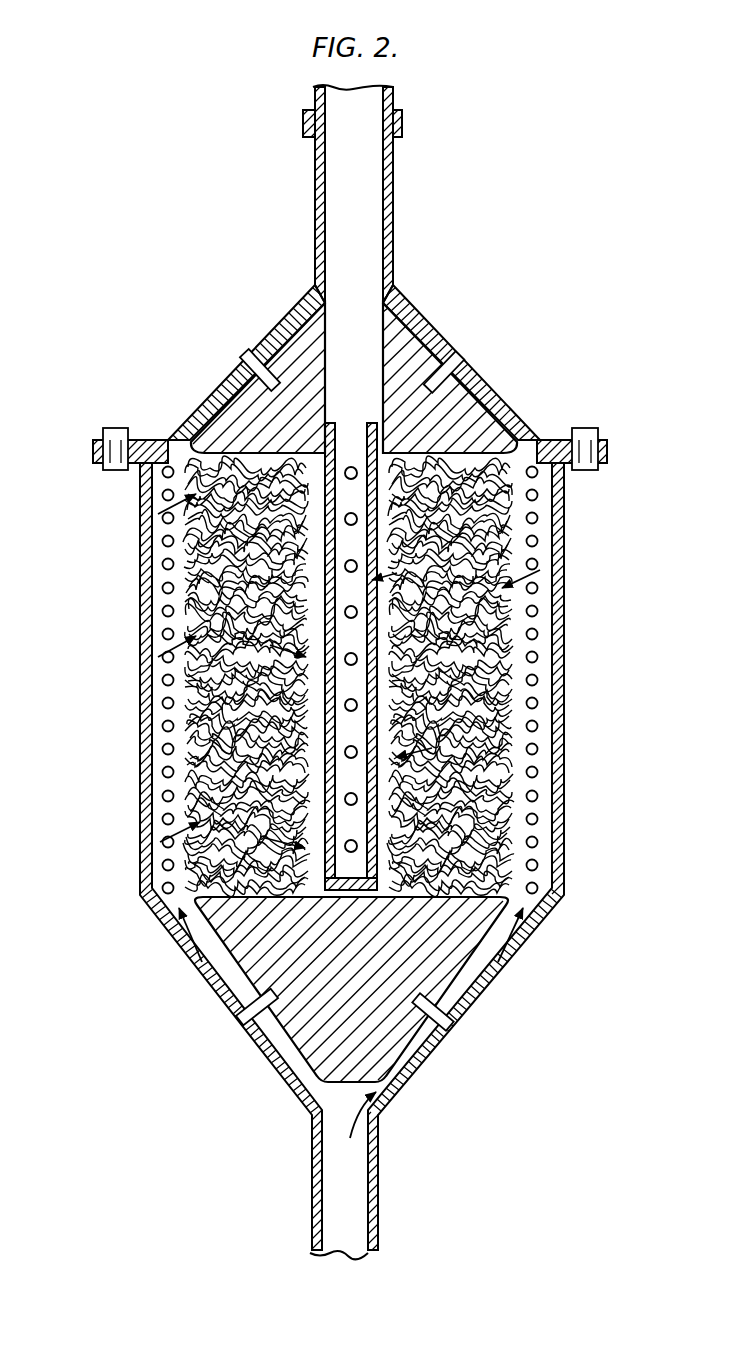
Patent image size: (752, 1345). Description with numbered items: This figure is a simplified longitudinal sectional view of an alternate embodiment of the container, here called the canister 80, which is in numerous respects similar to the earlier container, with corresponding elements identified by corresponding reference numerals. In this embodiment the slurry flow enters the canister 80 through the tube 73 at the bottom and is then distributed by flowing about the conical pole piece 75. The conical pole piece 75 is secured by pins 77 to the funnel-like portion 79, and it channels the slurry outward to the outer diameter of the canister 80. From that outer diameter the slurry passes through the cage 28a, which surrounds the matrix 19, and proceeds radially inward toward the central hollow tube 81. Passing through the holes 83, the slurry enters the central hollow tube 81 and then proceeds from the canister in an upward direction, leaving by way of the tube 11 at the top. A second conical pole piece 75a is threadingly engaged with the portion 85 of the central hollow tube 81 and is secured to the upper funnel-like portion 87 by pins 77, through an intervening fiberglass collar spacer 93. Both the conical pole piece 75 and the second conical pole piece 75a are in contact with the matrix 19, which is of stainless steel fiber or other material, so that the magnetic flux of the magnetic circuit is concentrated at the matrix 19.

The tube 11 is at (375, 229).
The upper funnel-like portion 87 is at (277, 320).
The fiberglass collar spacer 93 is at (480, 386).
The second conical pole piece 75a is at (226, 447).
The portion of tube 85 is at (330, 650).
The matrix 19 is at (478, 642).
The holes 83 is at (378, 660).
The central hollow tube 81 is at (383, 835).
The canister 80 is at (118, 681).
The cage 28a is at (540, 682).
The pins 77 is at (270, 996).
The funnel-like portion 79 is at (407, 1078).
The conical pole piece 75 is at (312, 1047).
The tube 73 is at (312, 1157).